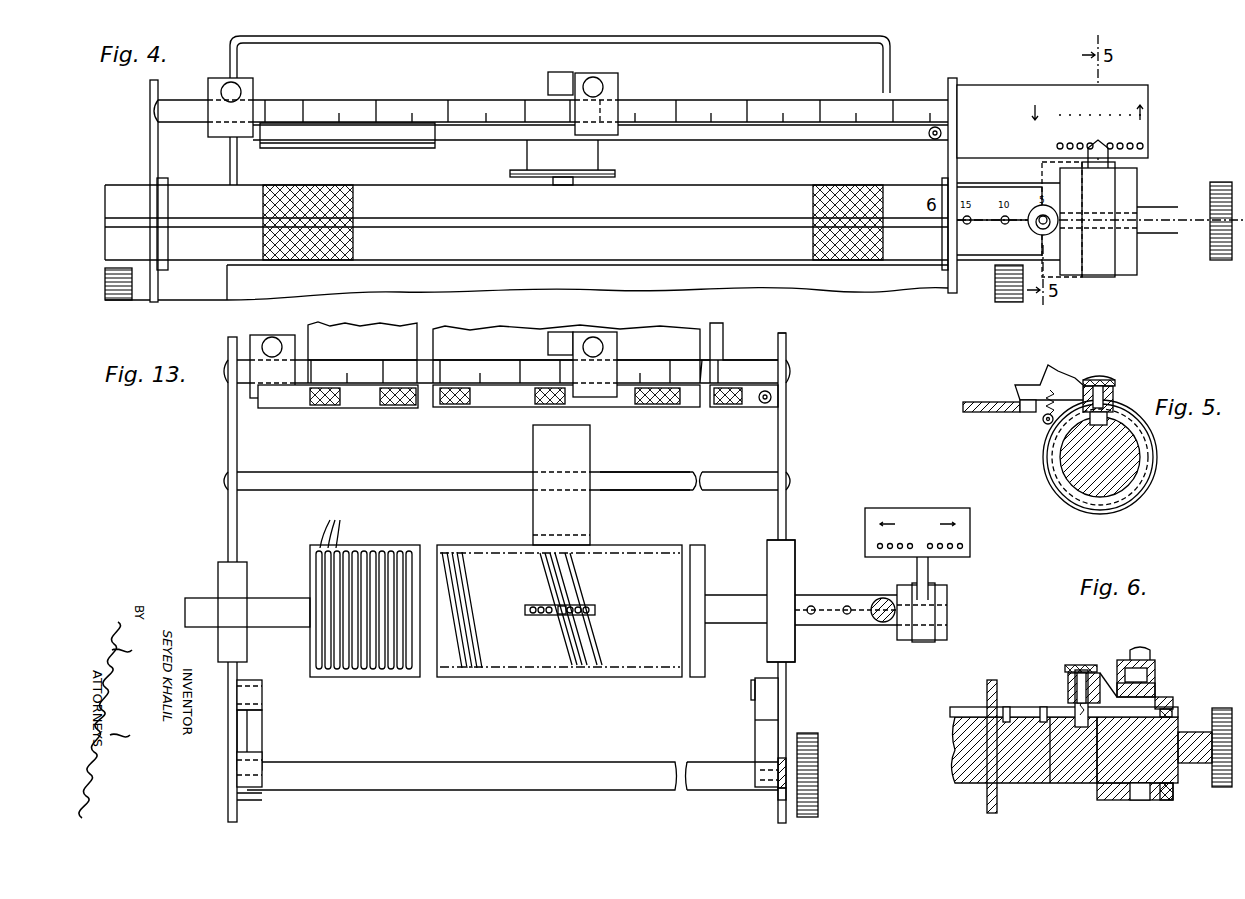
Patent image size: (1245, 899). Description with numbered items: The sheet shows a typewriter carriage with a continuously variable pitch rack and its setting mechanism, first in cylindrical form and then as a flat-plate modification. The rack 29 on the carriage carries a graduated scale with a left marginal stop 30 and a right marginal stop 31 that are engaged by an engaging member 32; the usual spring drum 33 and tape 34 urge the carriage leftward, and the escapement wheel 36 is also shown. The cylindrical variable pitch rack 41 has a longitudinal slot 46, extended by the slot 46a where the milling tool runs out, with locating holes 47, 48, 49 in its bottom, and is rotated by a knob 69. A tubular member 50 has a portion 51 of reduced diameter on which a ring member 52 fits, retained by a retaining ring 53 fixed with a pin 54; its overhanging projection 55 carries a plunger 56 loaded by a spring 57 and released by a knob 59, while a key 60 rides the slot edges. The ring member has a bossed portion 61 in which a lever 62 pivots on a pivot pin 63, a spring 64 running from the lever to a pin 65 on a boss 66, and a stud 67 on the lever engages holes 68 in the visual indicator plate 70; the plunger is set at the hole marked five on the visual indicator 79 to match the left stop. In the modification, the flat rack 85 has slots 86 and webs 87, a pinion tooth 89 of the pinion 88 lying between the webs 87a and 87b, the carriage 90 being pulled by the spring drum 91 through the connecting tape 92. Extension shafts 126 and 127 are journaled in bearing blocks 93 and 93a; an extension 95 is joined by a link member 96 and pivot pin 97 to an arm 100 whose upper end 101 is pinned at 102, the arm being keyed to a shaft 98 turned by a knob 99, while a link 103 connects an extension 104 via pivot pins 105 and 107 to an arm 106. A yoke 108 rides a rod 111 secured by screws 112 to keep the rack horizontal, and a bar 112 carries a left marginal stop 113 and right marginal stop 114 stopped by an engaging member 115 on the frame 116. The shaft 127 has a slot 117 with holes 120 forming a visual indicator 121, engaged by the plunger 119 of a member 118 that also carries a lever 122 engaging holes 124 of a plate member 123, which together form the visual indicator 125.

In FIG. 4, the rack 29 is at (290, 100).
In FIG. 4, the left marginal stop 30 is at (253, 85).
In FIG. 4, the right marginal stop 31 is at (612, 80).
In FIG. 4, the engaging member 32 is at (553, 72).
In FIG. 4, the spring drum 33 is at (390, 148).
In FIG. 4, the tape 34 is at (715, 140).
In FIG. 4, the escapement wheel 36 is at (615, 172).
In FIG. 4, the continuously variable pitch rack 41 is at (902, 185).
In FIG. 6, the continuously variable pitch rack 41 is at (960, 783).
In FIG. 4, the longitudinal slot 46 is at (985, 227).
In FIG. 6, the longitudinal slot 46 is at (958, 712).
In FIG. 4, the slot extension 46a is at (445, 227).
In FIG. 4, the locating hole 47 is at (945, 228).
In FIG. 6, the locating hole 47 is at (1003, 710).
In FIG. 4, the locating hole 48 is at (1035, 200).
In FIG. 6, the locating hole 48 is at (1042, 707).
In FIG. 4, the locating hole 49 is at (1050, 235).
In FIG. 6, the locating hole 49 is at (1075, 735).
In FIG. 6, the tubular member 50 is at (1115, 800).
In FIG. 6, the portion of reduced diameter 51 is at (1140, 792).
In FIG. 6, the ring member 52 is at (1165, 700).
In FIG. 6, the retaining ring 53 is at (1170, 712).
In FIG. 6, the pin 54 is at (1173, 790).
In FIG. 6, the overhanging projection 55 is at (1108, 680).
In FIG. 4, the plunger 56 is at (1043, 235).
In FIG. 5, the plunger 56 is at (1157, 457).
In FIG. 6, the plunger 56 is at (1082, 735).
In FIG. 6, the spring 57 is at (1078, 690).
In FIG. 5, the knob 59 is at (1115, 383).
In FIG. 6, the knob 59 is at (1090, 672).
In FIG. 6, the key 60 is at (1222, 708).
In FIG. 5, the bossed portion 61 is at (1108, 378).
In FIG. 6, the bossed portion 61 is at (1160, 658).
In FIG. 4, the lever 62 is at (1100, 197).
In FIG. 5, the lever 62 is at (1072, 372).
In FIG. 6, the lever 62 is at (1150, 660).
In FIG. 6, the pivot pin 63 is at (1158, 685).
In FIG. 4, the spring 64 is at (1085, 176).
In FIG. 5, the spring 64 is at (1047, 410).
In FIG. 5, the pin 65 is at (1048, 430).
In FIG. 5, the boss 66 is at (1046, 425).
In FIG. 5, the stud 67 is at (1022, 402).
In FIG. 4, the holes 68 is at (1130, 150).
In FIG. 5, the holes 68 is at (1022, 410).
In FIG. 4, the knob 69 is at (1220, 182).
In FIG. 4, the visual indicator plate 70 is at (1148, 95).
In FIG. 5, the visual indicator plate 70 is at (963, 404).
In FIG. 4, the visual indicator 79 is at (970, 185).
In FIG. 13, the rack 85 is at (348, 588).
In FIG. 13, the slots 86 is at (332, 525).
In FIG. 13, the webs 87 is at (318, 645).
In FIG. 13, the web 87a is at (570, 670).
In FIG. 13, the web 87b is at (585, 670).
In FIG. 13, the pinion 88 is at (595, 610).
In FIG. 13, the pinion tooth 89 is at (535, 608).
In FIG. 13, the carriage 90 is at (786, 450).
In FIG. 13, the spring drum 91 is at (345, 395).
In FIG. 13, the connecting tape 92 is at (490, 395).
In FIG. 13, the bearing block 93 is at (247, 565).
In FIG. 13, the bearing block 93a is at (795, 640).
In FIG. 13, the extension 95 is at (782, 685).
In FIG. 13, the link member 96 is at (755, 722).
In FIG. 13, the pivot pin 97 is at (751, 690).
In FIG. 13, the shaft 98 is at (595, 762).
In FIG. 13, the knob 99 is at (818, 734).
In FIG. 13, the arm 100 is at (775, 795).
In FIG. 13, the upper end 101 is at (770, 765).
In FIG. 13, the pivot pin 102 is at (760, 775).
In FIG. 13, the link 103 is at (250, 727).
In FIG. 13, the extension 104 is at (250, 700).
In FIG. 13, the pivot pin 105 is at (262, 688).
In FIG. 13, the arm 106 is at (240, 800).
In FIG. 13, the pivot pin 107 is at (255, 770).
In FIG. 13, the yoke 108 is at (590, 518).
In FIG. 13, the rod 111 is at (640, 475).
In FIG. 13, the bar 112 is at (360, 360).
In FIG. 13, the left marginal stop 113 is at (283, 335).
In FIG. 13, the right marginal stop 114 is at (610, 340).
In FIG. 13, the engaging member 115 is at (560, 332).
In FIG. 13, the frame 116 is at (495, 330).
In FIG. 13, the longitudinal slot 117 is at (840, 625).
In FIG. 13, the member 118 is at (920, 640).
In FIG. 13, the plunger 119 is at (883, 622).
In FIG. 13, the holes 120 is at (847, 604).
In FIG. 13, the visual indicator 121 is at (815, 606).
In FIG. 13, the lever 122 is at (928, 580).
In FIG. 13, the plate member 123 is at (786, 540).
In FIG. 13, the holes 124 is at (940, 549).
In FIG. 13, the visual indicator 125 is at (970, 520).
In FIG. 13, the extension shaft 126 is at (282, 598).
In FIG. 13, the extension shaft 127 is at (725, 623).